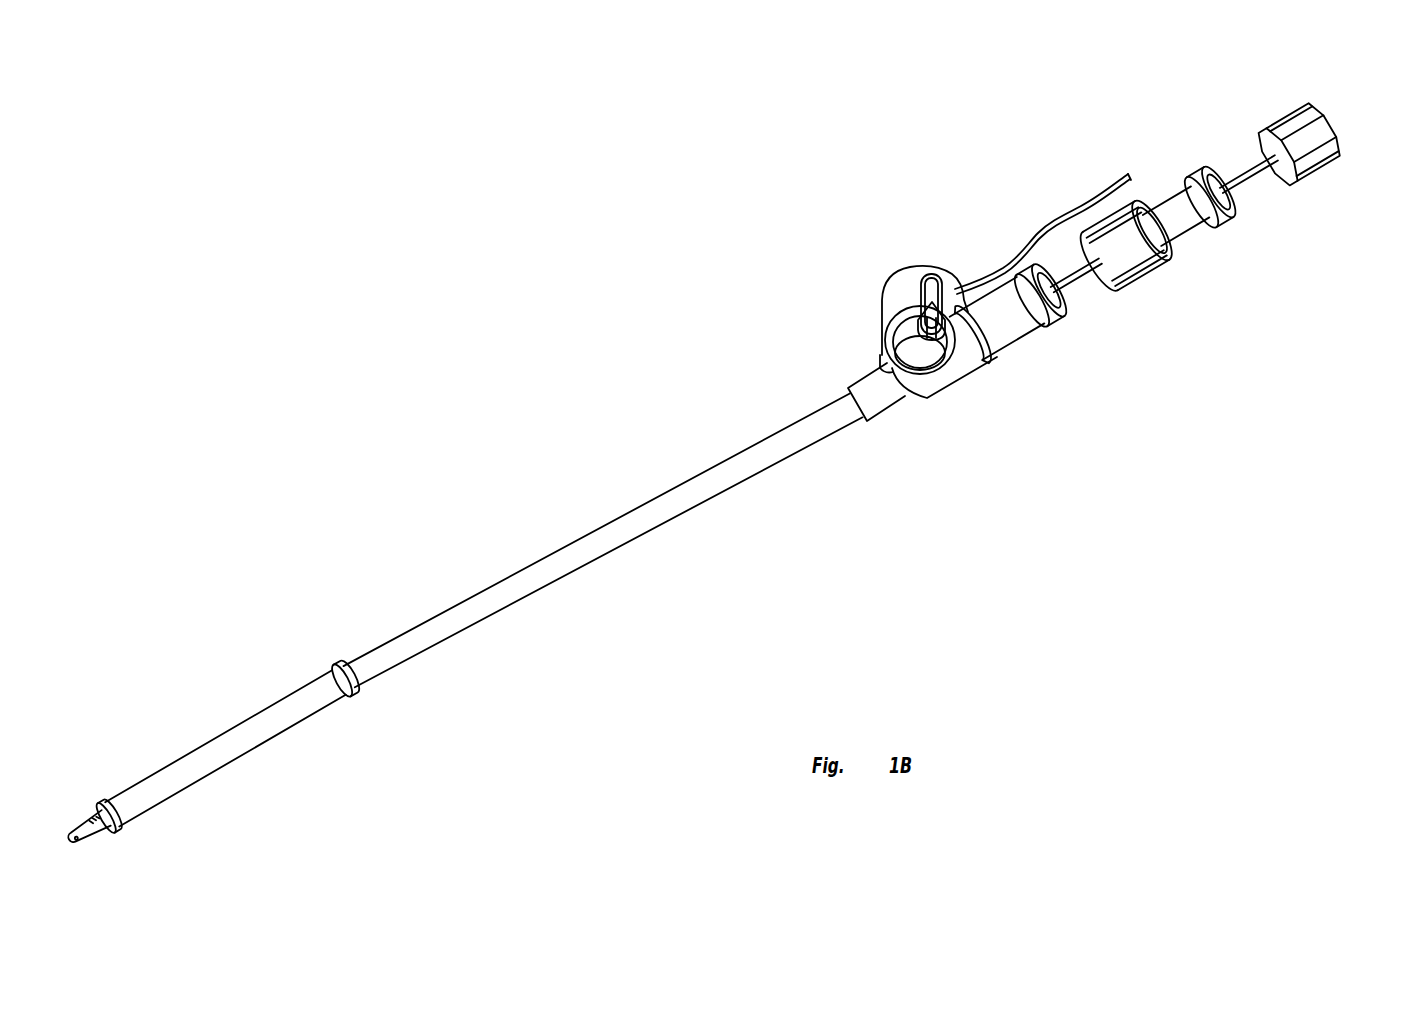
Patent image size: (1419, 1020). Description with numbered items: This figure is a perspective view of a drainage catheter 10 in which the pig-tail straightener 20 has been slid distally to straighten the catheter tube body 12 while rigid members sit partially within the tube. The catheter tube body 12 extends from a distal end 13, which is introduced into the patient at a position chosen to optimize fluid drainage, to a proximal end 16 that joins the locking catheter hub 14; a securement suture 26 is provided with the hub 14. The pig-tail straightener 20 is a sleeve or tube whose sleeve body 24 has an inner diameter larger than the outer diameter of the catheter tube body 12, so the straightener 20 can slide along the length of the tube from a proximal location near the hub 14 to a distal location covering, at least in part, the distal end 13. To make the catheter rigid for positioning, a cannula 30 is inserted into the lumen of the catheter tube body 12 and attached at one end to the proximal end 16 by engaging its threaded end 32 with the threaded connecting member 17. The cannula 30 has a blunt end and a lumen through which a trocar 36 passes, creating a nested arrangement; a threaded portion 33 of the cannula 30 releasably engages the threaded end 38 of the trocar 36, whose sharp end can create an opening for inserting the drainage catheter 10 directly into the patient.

The drainage catheter 10 is at (518, 366).
The catheter tube body 12 is at (571, 488).
The distal end 13 is at (65, 848).
The locking catheter hub 14 is at (960, 420).
The proximal end 16 is at (1040, 348).
The threaded connecting member 17 is at (1058, 320).
The pig-tail straightener 20 is at (250, 787).
The sleeve body 24 is at (187, 750).
The securement suture 26 is at (1047, 235).
The cannula 30 is at (1107, 319).
The threaded end 32 is at (1145, 280).
The threaded portion 33 is at (1213, 230).
The trocar 36 is at (1271, 203).
The threaded end 38 is at (1320, 170).